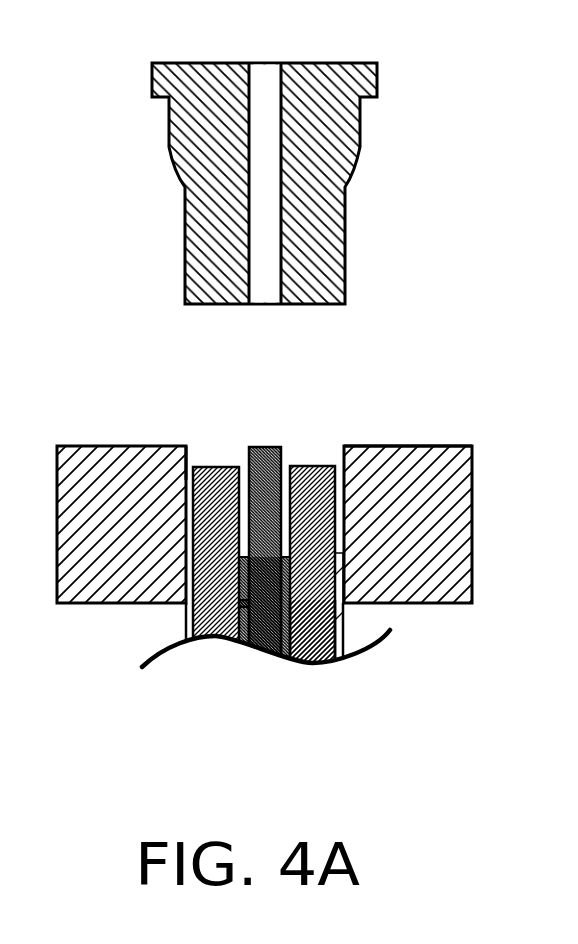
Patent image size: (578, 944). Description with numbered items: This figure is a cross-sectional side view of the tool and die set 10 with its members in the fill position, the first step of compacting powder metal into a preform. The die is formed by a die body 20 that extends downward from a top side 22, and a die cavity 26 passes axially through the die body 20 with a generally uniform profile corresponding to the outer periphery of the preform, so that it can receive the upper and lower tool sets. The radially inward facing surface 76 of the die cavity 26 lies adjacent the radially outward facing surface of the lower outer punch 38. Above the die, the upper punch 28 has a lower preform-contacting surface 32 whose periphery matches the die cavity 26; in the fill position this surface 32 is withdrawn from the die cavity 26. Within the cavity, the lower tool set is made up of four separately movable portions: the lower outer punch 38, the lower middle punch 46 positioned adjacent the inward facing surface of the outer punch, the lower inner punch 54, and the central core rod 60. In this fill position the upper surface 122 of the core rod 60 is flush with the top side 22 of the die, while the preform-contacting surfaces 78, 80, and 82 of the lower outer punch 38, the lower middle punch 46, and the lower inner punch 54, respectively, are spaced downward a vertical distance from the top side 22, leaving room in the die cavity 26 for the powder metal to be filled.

The tool and die set 10 is at (451, 116).
The upper punch 28 is at (330, 169).
The lower preform-contacting surface 32 is at (323, 304).
The die body 20 is at (438, 522).
The top side 22 is at (407, 446).
The radially inward facing surface 76 is at (187, 455).
The die cavity 26 is at (217, 436).
The upper surface 122 is at (267, 447).
The core rod 60 is at (262, 650).
The preform-contacting surface 82 is at (243, 562).
The lower inner punch 54 is at (238, 647).
The preform-contacting surface 80 is at (313, 466).
The lower middle punch 46 is at (310, 652).
The preform-contacting surface 78 is at (342, 552).
The lower outer punch 38 is at (345, 655).